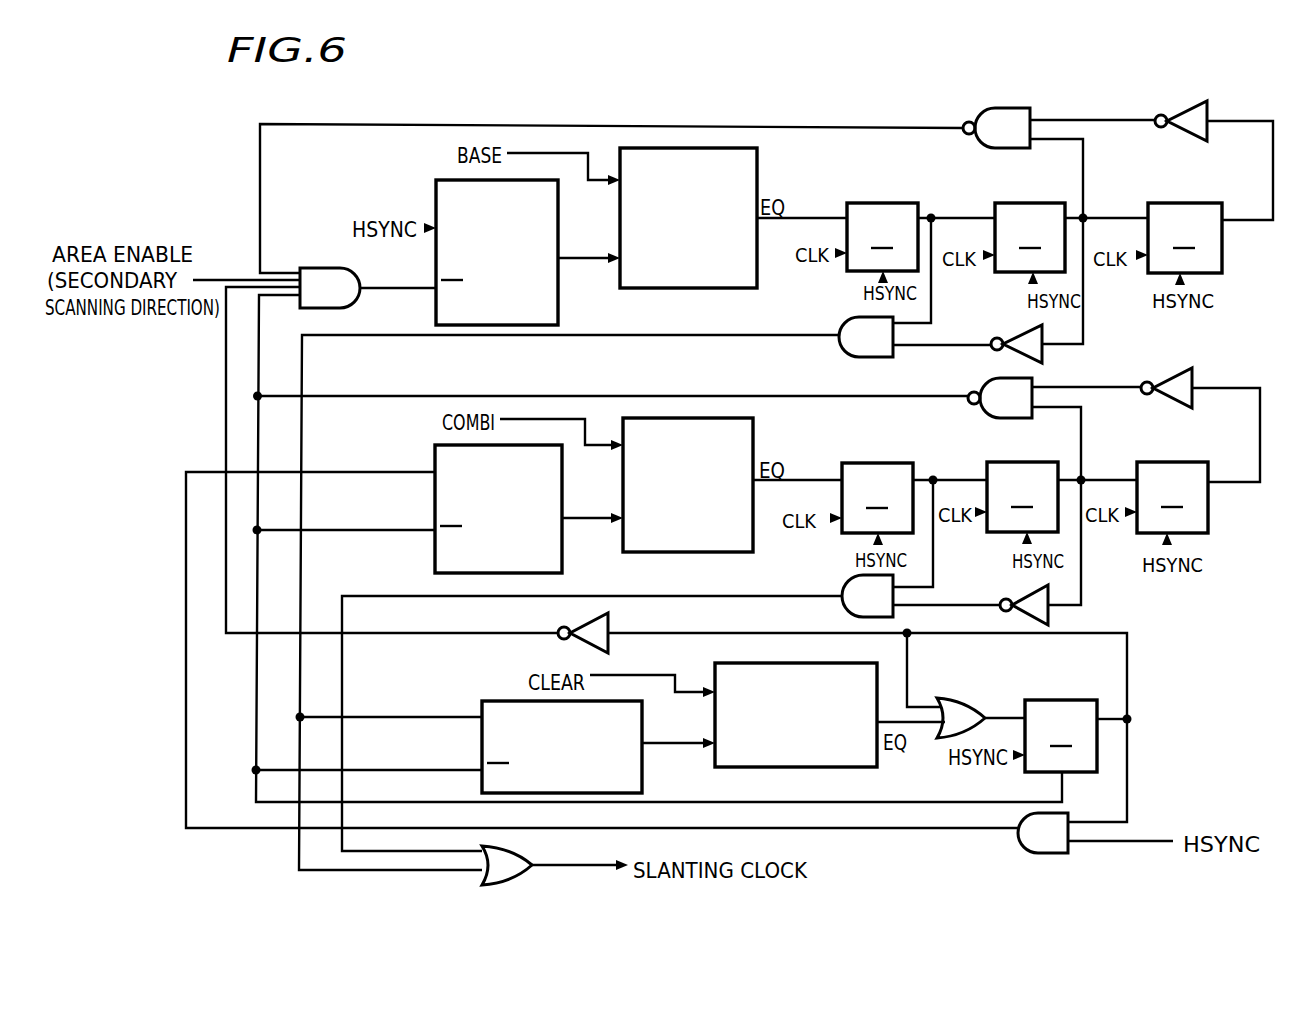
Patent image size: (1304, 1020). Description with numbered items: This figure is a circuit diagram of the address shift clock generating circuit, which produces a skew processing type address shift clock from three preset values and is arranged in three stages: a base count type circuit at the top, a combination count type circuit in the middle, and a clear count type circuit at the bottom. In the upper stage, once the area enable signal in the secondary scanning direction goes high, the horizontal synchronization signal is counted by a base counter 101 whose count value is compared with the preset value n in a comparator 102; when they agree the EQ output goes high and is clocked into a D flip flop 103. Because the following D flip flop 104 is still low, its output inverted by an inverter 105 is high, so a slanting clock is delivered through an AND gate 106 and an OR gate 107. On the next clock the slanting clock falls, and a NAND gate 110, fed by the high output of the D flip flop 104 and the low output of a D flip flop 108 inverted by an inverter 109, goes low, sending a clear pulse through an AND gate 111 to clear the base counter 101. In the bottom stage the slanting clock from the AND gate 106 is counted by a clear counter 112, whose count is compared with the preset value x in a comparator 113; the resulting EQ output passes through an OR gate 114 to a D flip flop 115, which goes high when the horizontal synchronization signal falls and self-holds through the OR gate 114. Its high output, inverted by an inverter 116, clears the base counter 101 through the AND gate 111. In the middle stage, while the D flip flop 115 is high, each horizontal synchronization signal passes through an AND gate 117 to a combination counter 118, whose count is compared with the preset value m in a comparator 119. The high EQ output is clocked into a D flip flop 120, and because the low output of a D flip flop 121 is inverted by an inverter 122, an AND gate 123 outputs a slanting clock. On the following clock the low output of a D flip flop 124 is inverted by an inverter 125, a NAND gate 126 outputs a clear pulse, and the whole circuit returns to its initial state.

The base counter 101 is at (445, 180).
The comparator 102 is at (623, 150).
The D flip flop 103 is at (893, 203).
The D flip flop 104 is at (1010, 203).
The inverter 105 is at (1023, 328).
The AND gate 106 is at (852, 317).
The OR gate 107 is at (517, 850).
The D flip flop 108 is at (1197, 203).
The inverter 109 is at (1187, 105).
The NAND gate 110 is at (1010, 108).
The AND gate 111 is at (336, 268).
The clear counter 112 is at (642, 767).
The comparator 113 is at (853, 767).
The OR gate 114 is at (957, 698).
The D flip flop 115 is at (1057, 700).
The inverter 116 is at (572, 624).
The AND gate 117 is at (1020, 848).
The combination counter 118 is at (562, 560).
The comparator 119 is at (753, 428).
The D flip flop 120 is at (855, 463).
The D flip flop 121 is at (1040, 462).
The inverter 122 is at (1025, 592).
The AND gate 123 is at (848, 578).
The D flip flop 124 is at (1170, 462).
The inverter 125 is at (1180, 370).
The NAND gate 126 is at (995, 378).